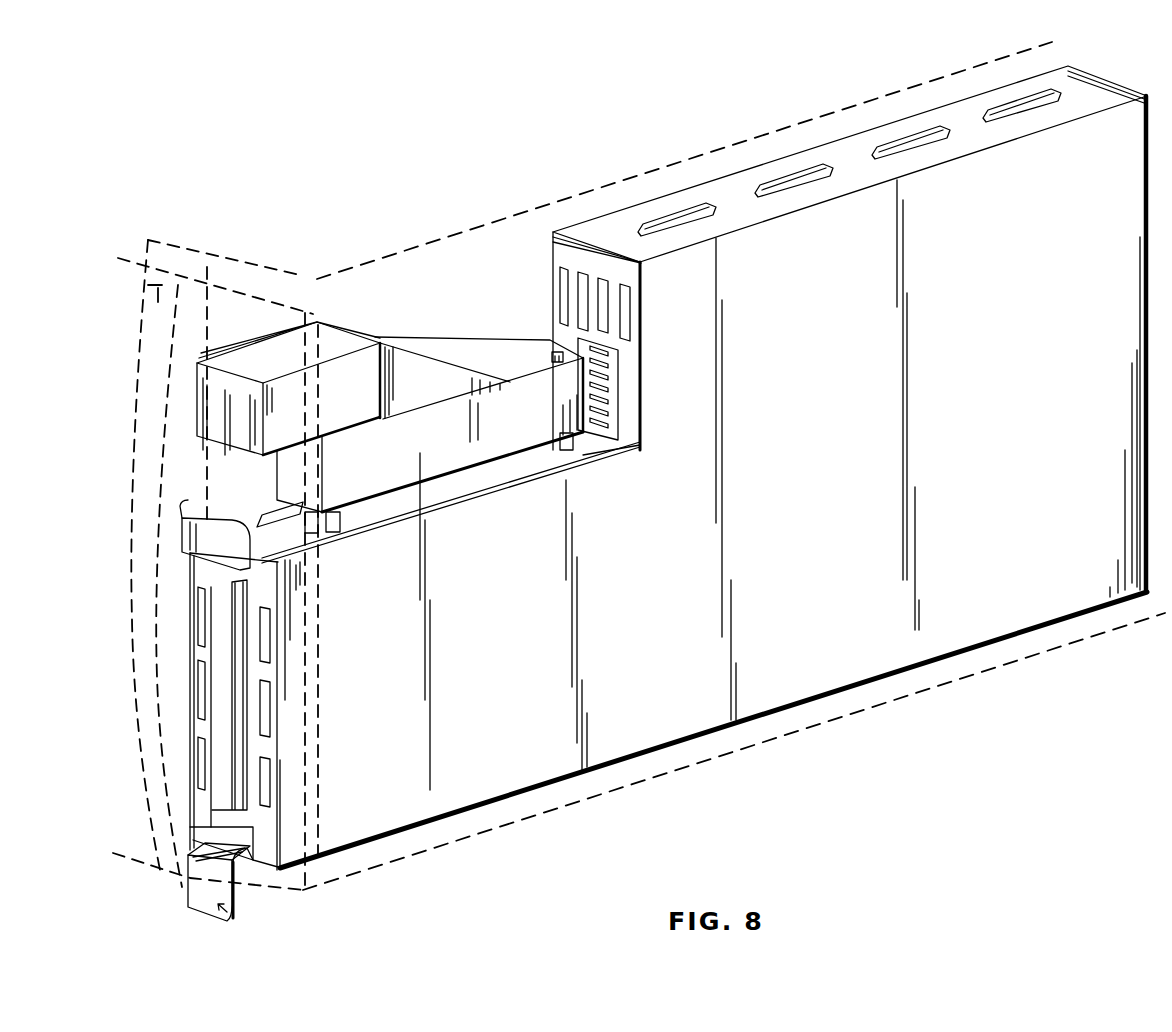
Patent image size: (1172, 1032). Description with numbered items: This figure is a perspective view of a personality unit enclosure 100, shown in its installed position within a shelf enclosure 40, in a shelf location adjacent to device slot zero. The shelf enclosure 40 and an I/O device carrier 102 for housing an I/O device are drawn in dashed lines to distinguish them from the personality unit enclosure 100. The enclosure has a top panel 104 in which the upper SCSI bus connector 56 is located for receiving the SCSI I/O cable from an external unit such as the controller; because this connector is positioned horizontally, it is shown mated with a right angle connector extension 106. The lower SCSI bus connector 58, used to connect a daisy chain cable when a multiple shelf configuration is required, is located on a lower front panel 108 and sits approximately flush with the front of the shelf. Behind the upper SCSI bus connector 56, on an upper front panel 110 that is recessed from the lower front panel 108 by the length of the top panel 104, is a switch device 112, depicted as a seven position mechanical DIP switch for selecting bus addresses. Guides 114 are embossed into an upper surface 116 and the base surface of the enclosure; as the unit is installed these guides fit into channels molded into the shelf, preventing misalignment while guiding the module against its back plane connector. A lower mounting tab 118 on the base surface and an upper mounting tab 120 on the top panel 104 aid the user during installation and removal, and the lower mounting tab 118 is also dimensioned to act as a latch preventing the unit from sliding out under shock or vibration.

The shelf enclosure 40 is at (317, 322).
The upper SCSI bus connector 56 is at (456, 480).
The lower SCSI bus connector 58 is at (240, 737).
The personality unit enclosure 100 is at (937, 735).
The I/O device carrier 102 is at (193, 295).
The top panel 104 is at (584, 452).
The right angle connector extension 106 is at (522, 368).
The lower front panel 108 is at (257, 830).
The upper front panel 110 is at (628, 378).
The switch device 112 is at (612, 407).
The guides 114 is at (1068, 100).
The upper surface 116 is at (968, 138).
The lower mounting tab 118 is at (233, 917).
The upper mounting tab 120 is at (207, 520).